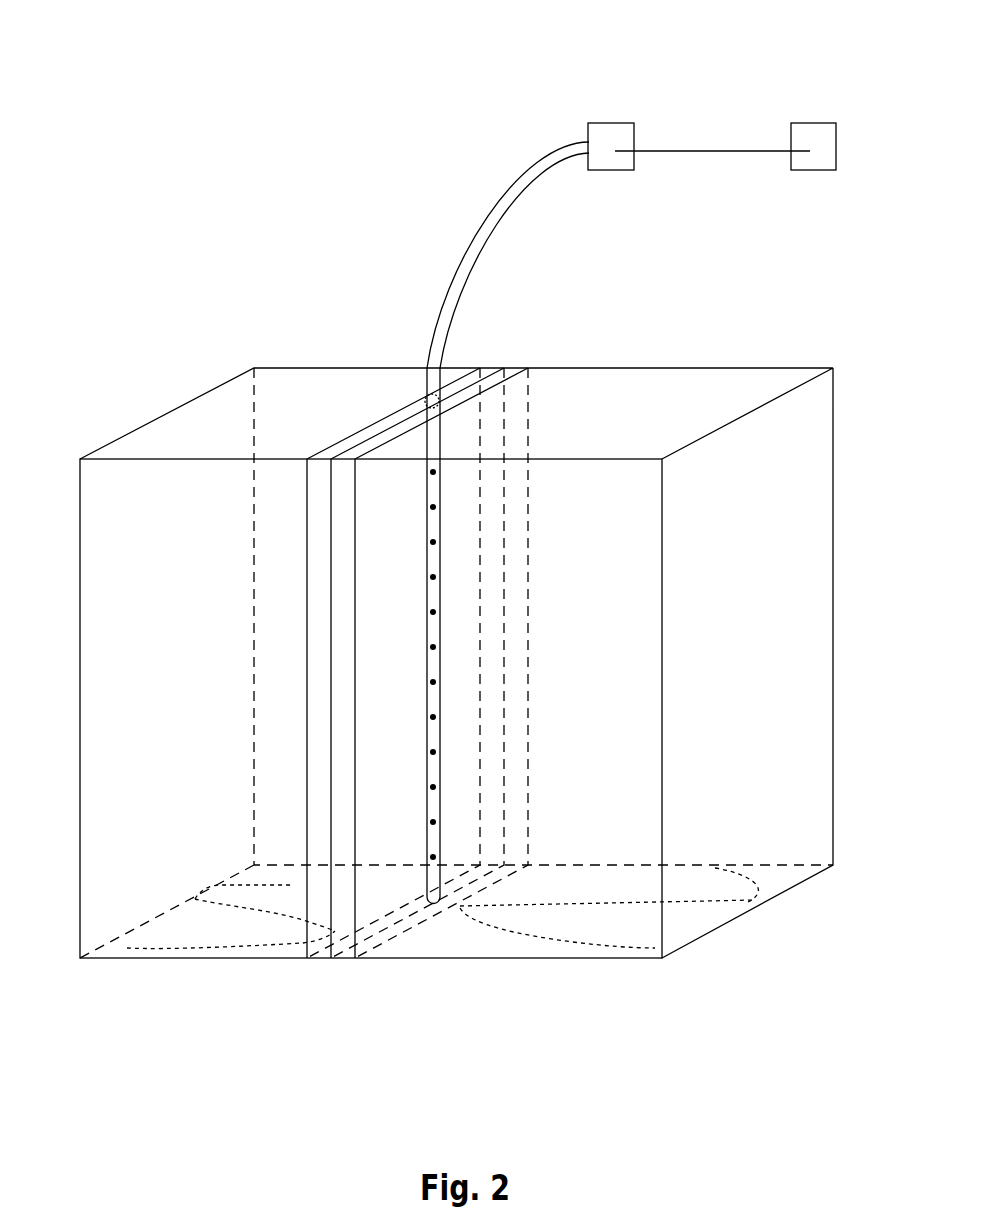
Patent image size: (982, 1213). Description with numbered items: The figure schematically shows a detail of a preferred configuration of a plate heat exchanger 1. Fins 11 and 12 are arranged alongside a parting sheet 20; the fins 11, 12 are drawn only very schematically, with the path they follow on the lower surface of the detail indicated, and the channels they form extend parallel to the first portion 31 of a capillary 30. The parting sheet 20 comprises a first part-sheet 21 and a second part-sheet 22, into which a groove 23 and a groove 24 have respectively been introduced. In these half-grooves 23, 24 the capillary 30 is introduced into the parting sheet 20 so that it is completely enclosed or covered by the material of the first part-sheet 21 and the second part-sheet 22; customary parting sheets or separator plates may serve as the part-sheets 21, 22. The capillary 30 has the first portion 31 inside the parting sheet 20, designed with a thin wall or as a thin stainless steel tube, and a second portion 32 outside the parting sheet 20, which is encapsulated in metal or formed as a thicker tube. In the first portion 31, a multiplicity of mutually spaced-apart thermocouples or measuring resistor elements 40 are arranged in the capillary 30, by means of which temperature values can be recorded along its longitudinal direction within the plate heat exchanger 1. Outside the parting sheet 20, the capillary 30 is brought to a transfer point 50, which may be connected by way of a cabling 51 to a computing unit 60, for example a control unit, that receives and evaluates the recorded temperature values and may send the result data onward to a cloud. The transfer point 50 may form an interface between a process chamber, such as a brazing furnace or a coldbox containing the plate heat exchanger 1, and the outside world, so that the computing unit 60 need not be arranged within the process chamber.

The plate heat exchanger 1 is at (216, 263).
The fin 11 is at (165, 945).
The fin 12 is at (597, 945).
The parting sheet 20 is at (422, 587).
The first part-sheet 21 is at (482, 368).
The second part-sheet 22 is at (514, 368).
The groove 23 is at (422, 402).
The groove 24 is at (440, 408).
The capillary 30 is at (468, 523).
The first portion 31 is at (437, 672).
The second portion 32 is at (479, 218).
The thermocouples or measuring resistor elements 40 is at (433, 575).
The transfer point 50 is at (612, 123).
The cabling 51 is at (700, 150).
The computing unit 60 is at (814, 123).